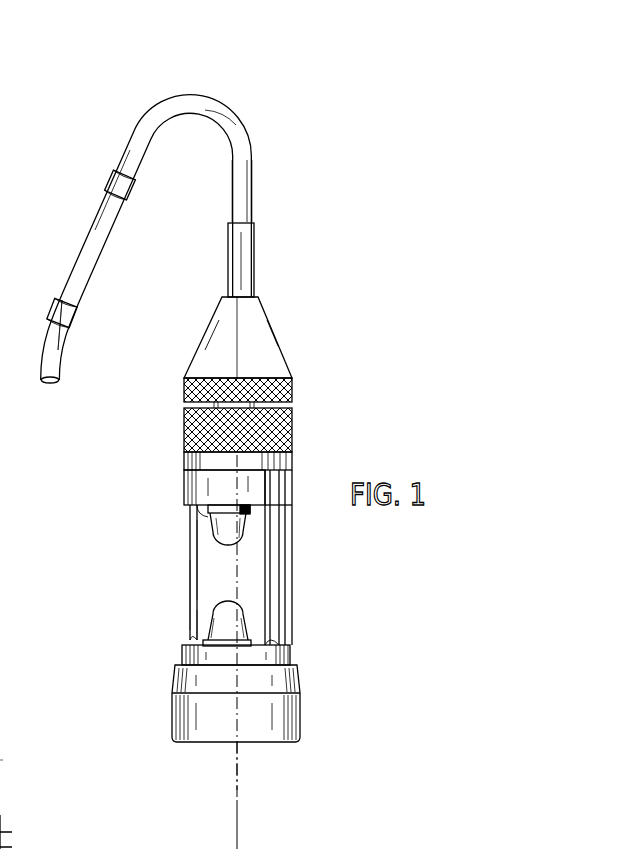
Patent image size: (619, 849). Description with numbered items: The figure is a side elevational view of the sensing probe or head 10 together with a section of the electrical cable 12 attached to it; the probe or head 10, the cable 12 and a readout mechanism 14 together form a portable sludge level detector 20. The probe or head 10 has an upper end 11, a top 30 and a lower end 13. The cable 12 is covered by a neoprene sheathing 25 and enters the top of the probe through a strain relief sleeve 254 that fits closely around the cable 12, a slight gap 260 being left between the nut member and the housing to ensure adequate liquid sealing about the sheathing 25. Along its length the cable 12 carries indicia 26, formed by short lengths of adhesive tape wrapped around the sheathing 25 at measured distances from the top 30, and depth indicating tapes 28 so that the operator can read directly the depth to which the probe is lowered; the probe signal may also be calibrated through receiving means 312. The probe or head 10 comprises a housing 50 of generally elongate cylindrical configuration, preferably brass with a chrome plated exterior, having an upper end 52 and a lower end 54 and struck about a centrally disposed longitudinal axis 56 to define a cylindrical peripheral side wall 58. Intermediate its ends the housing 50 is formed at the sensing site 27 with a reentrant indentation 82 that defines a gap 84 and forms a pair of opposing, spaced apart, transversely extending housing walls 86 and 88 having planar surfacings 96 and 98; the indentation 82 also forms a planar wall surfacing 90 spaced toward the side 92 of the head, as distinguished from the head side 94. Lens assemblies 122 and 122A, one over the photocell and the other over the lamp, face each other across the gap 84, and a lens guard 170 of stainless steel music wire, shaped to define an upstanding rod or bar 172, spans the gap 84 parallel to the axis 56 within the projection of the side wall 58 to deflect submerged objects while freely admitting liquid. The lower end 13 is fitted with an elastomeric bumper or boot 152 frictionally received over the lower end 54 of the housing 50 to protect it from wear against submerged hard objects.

The sensing probe or head 10 is at (209, 450).
The upper end 11 is at (193, 373).
The cable 12 is at (205, 217).
The lower end 13 is at (237, 716).
The readout mechanism 14 is at (12, 750).
The portable sludge level detector 20 is at (289, 196).
The neoprene sheathing 25 is at (216, 101).
The indicia 26 is at (95, 166).
The sensing site 27 is at (157, 590).
The depth indicating tapes 28 is at (130, 192).
The top 30 is at (253, 297).
The housing 50 is at (219, 556).
The upper end 52 is at (248, 483).
The lower end 54 is at (294, 680).
The longitudinal axis 56 is at (237, 830).
The cylindrical peripheral side wall 58 is at (212, 557).
The reentrant indentation 82 is at (207, 604).
The gap 84 is at (209, 557).
The housing wall 86 is at (247, 505).
The housing wall 88 is at (278, 636).
The planar wall surfacing 90 is at (262, 521).
The side of head 92 is at (293, 493).
The head side 94 is at (184, 495).
The planar surfacing 96 is at (208, 517).
The planar surfacing 98 is at (188, 638).
The lens assembly 122 is at (247, 548).
The lens assembly 122A is at (247, 623).
The elastomeric bumper or boot 152 is at (302, 734).
The lens guard 170 is at (185, 597).
The upstanding rod or bar 172 is at (188, 518).
The strain relief sleeve 254 is at (253, 252).
The gap 260 is at (184, 404).
The receiving means 312 is at (5, 822).